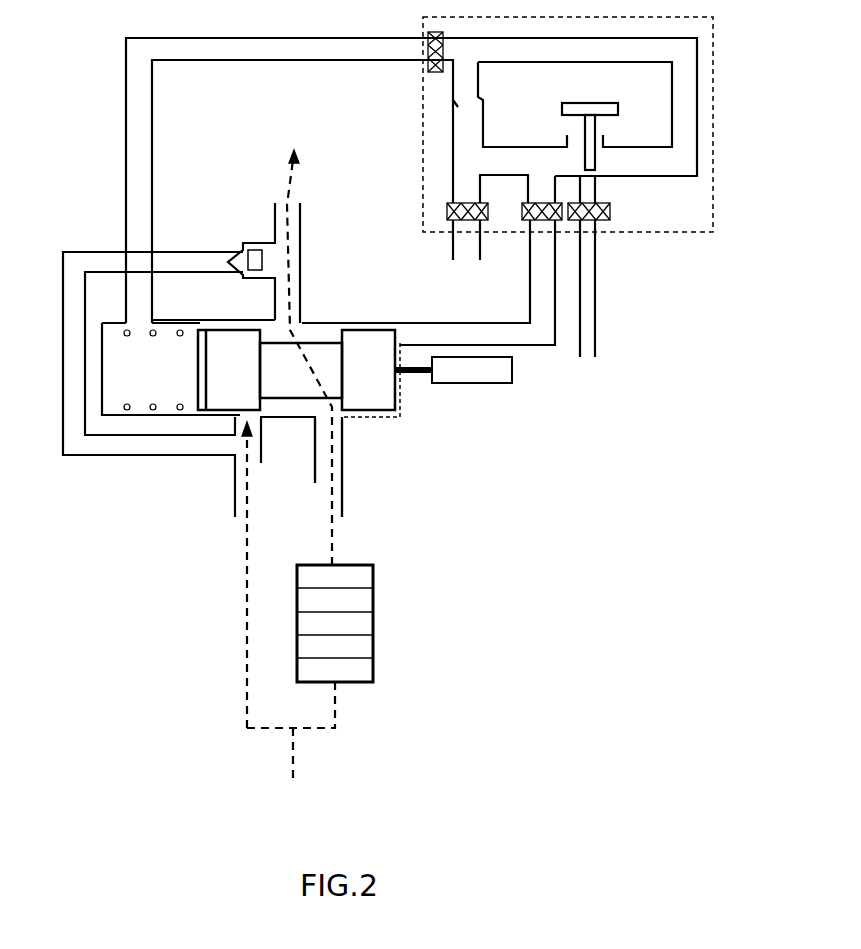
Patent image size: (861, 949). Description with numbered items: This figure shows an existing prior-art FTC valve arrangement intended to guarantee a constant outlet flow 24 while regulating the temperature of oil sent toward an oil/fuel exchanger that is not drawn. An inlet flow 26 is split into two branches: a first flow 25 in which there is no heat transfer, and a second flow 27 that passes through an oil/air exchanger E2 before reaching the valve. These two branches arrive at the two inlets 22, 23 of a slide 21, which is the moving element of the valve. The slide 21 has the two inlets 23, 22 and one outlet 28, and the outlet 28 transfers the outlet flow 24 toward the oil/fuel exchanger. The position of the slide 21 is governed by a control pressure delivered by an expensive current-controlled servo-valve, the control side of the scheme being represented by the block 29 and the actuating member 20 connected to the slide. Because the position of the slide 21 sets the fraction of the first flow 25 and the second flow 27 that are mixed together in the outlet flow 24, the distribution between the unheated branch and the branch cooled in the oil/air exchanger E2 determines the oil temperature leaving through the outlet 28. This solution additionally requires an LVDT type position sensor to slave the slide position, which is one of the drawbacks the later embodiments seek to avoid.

The actuator 20 is at (476, 375).
The slide 21 is at (373, 398).
The inlet 22 is at (345, 500).
The inlet 23 is at (233, 497).
The outlet flow 24 is at (285, 175).
The first flow 25 is at (243, 650).
The inlet flow 26 is at (285, 758).
The second flow 27 is at (340, 710).
The outlet 28 is at (303, 285).
The control unit 29 is at (716, 236).
The oil/air exchanger E2 is at (373, 625).